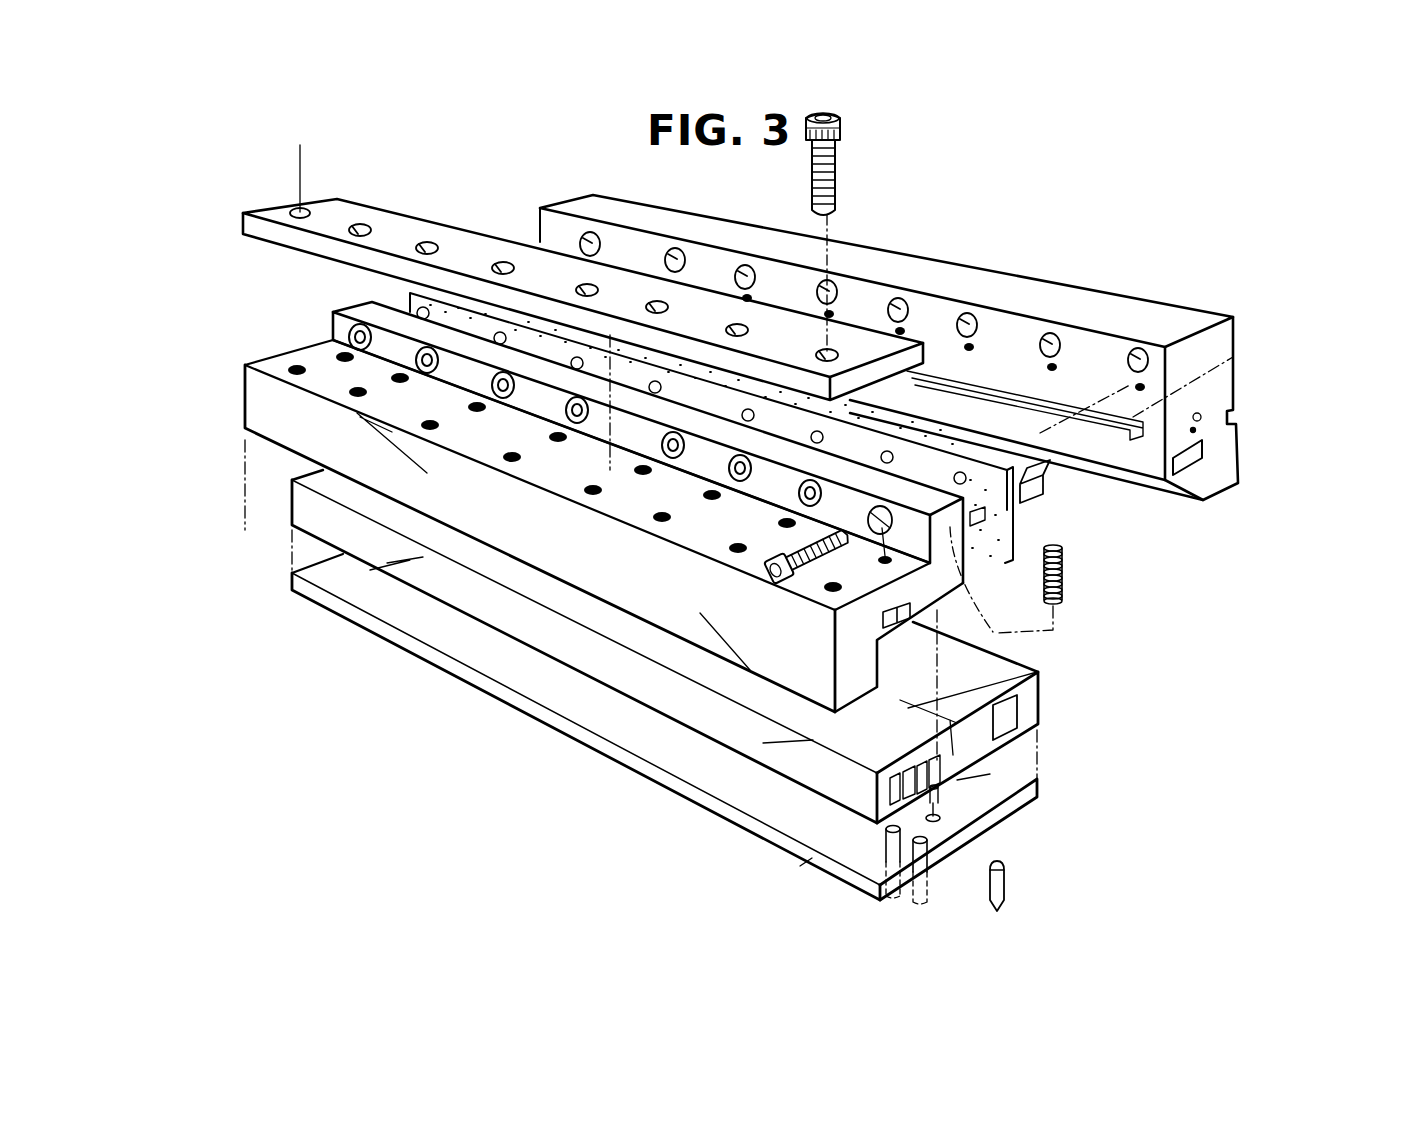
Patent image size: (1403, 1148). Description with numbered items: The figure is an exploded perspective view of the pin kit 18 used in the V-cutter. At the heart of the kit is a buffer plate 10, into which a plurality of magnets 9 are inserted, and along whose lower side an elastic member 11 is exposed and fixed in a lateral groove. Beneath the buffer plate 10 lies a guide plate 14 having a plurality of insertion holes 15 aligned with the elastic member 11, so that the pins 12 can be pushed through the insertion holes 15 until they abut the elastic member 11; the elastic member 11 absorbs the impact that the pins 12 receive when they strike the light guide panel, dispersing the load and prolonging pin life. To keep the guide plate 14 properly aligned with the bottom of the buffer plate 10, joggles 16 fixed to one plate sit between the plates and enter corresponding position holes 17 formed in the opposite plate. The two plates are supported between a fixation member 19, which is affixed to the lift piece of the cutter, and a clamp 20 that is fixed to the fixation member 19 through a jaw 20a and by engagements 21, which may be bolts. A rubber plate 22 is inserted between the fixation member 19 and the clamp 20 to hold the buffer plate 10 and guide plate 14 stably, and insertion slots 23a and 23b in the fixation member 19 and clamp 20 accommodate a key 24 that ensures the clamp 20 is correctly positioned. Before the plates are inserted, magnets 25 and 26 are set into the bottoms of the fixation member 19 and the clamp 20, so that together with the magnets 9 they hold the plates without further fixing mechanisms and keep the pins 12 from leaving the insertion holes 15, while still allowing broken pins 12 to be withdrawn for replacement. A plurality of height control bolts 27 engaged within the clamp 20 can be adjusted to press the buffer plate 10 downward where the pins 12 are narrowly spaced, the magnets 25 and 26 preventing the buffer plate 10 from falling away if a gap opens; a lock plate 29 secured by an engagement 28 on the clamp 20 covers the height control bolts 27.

The magnets 9 is at (1040, 747).
The buffer plate 10 is at (690, 703).
The elastic member 11 is at (800, 866).
The pin 12 is at (1005, 897).
The guide plate 14 is at (763, 833).
The insertion holes 15 is at (847, 880).
The joggles 16 is at (960, 787).
The position holes 17 is at (940, 819).
The pin kit 18 is at (523, 740).
The fixation member 19 is at (1227, 452).
The clamp 20 is at (385, 318).
The jaw 20a is at (460, 612).
The engagements 21 is at (883, 512).
The rubber plate 22 is at (1023, 510).
The insertion slot 23a is at (913, 618).
The insertion slot 23b is at (1197, 417).
The key 24 is at (1035, 470).
The magnet 25 is at (1190, 457).
The magnet 26 is at (1003, 717).
The height control bolts 27 is at (1065, 578).
The engagement 28 is at (843, 173).
The lock plate 29 is at (475, 245).